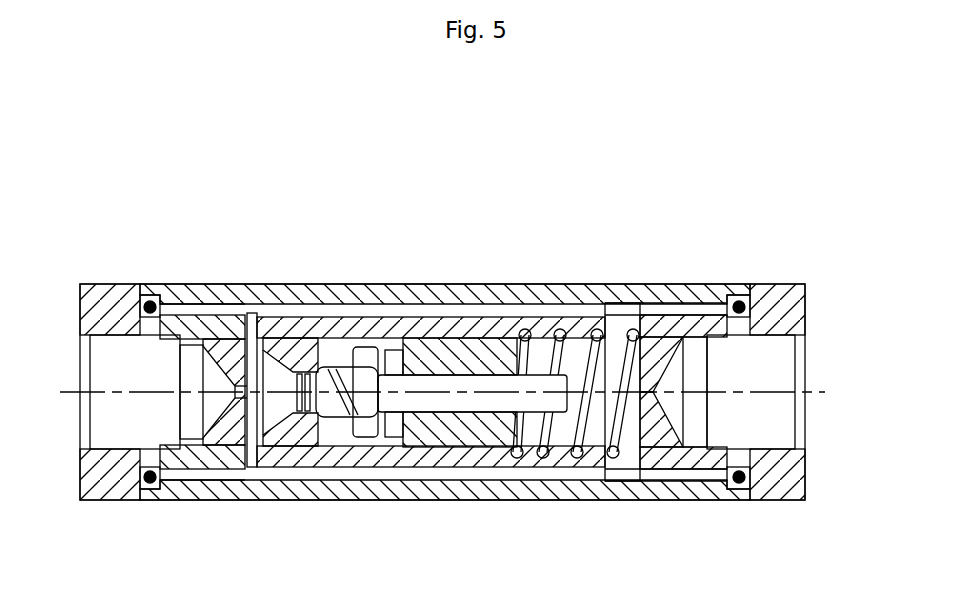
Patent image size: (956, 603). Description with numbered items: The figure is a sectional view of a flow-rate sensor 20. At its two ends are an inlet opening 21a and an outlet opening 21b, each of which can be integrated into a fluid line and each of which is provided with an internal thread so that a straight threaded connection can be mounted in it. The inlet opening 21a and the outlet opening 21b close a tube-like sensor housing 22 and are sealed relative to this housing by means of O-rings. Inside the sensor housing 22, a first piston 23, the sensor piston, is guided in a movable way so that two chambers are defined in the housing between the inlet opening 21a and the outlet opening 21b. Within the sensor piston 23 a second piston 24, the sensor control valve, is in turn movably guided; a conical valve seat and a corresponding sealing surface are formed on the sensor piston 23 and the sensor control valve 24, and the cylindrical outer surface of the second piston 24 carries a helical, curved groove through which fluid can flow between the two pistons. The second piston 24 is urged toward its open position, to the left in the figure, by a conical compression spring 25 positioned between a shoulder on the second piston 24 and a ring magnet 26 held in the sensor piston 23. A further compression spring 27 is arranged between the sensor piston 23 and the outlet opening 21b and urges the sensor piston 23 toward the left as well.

The flow-rate sensor 20 is at (206, 532).
The inlet opening 21a is at (123, 300).
The outlet opening 21b is at (761, 300).
The sensor housing 22 is at (187, 300).
The first piston 23 is at (270, 317).
The second piston 24 is at (315, 367).
The conical compression spring 25 is at (393, 350).
The ring magnet 26 is at (470, 345).
The compression spring 27 is at (563, 330).